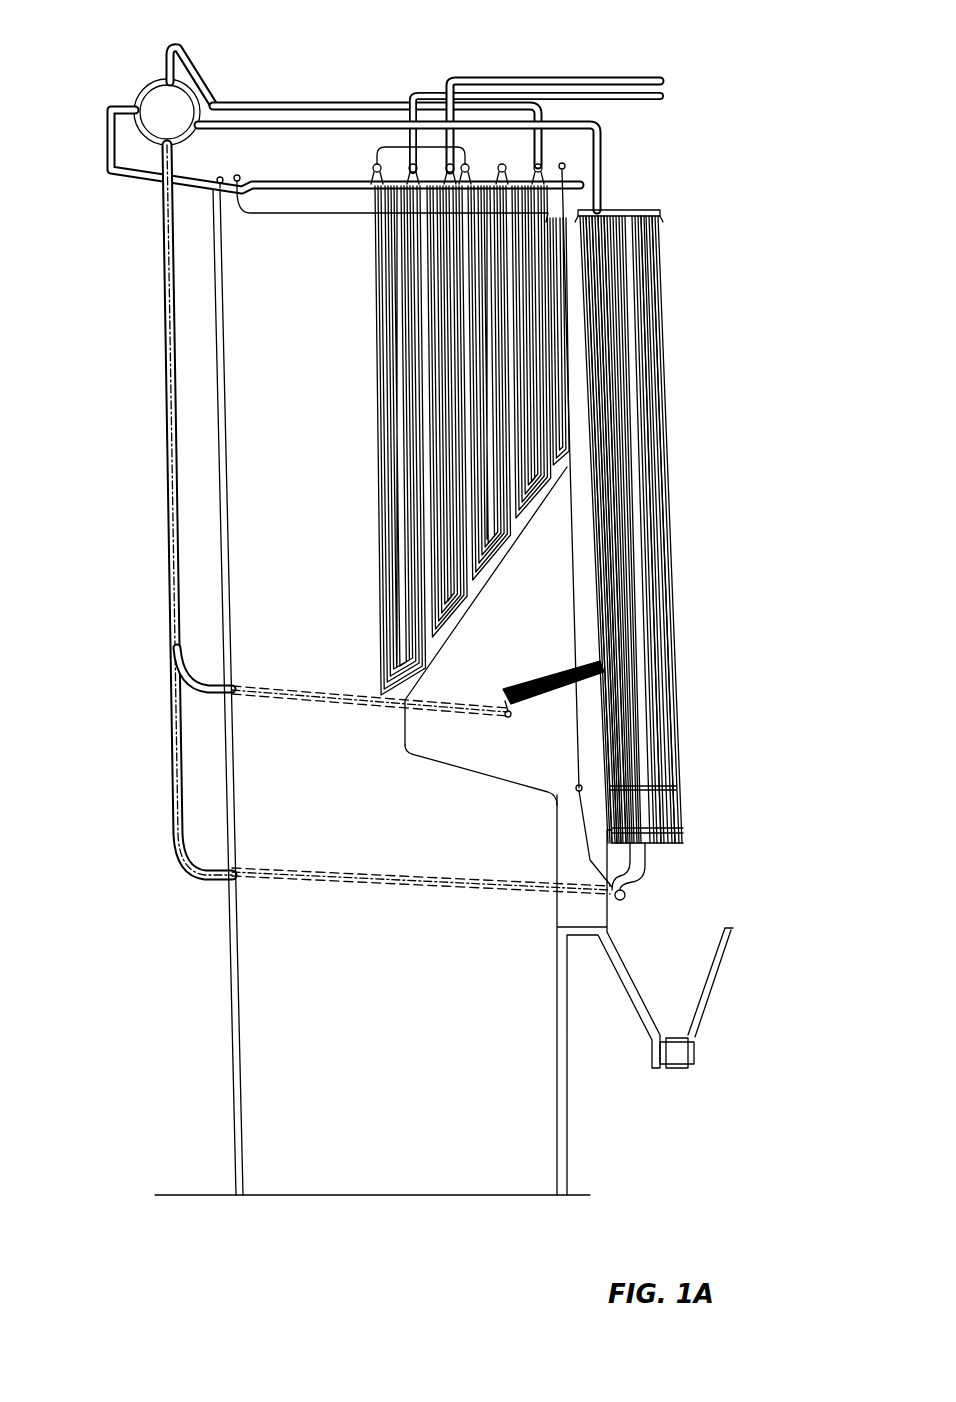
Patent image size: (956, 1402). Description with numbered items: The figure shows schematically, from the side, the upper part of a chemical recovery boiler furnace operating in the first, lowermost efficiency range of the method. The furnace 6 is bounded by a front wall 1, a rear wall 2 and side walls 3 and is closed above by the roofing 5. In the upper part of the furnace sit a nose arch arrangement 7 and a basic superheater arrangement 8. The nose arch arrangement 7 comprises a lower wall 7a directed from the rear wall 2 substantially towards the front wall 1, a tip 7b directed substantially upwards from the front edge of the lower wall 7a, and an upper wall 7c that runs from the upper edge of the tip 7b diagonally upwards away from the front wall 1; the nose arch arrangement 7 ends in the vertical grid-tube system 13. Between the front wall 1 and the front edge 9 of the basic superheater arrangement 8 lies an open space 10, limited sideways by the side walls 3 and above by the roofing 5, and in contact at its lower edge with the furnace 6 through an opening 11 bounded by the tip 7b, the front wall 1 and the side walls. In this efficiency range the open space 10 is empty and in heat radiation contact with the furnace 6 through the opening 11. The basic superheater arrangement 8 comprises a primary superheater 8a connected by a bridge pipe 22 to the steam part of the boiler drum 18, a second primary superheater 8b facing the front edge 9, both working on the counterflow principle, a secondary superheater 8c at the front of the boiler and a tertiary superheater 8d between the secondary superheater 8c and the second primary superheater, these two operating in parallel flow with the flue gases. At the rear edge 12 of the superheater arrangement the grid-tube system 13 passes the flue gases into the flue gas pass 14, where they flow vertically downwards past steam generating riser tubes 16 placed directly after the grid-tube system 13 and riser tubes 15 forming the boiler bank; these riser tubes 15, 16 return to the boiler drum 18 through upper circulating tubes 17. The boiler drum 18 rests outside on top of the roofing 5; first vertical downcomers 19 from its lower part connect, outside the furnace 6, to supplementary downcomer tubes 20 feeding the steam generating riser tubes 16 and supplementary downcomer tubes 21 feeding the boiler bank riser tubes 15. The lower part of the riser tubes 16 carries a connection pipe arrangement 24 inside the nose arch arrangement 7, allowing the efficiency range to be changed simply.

The front wall 1 is at (232, 957).
The rear wall 2 is at (568, 1062).
The side wall 3 is at (400, 1069).
The roofing 5 is at (270, 185).
The furnace 6 is at (408, 1002).
The nose arch arrangement 7 is at (658, 553).
The lower wall 7a is at (467, 770).
The tip 7b is at (402, 730).
The upper wall 7c is at (488, 583).
The basic superheater arrangement 8 is at (548, 222).
The primary superheater 8a is at (527, 473).
The primary superheater 8b is at (490, 520).
The secondary superheater 8c is at (395, 365).
The tertiary superheater 8d is at (443, 305).
The front edge 9 is at (436, 421).
The open space 10 is at (327, 450).
The opening 11 is at (315, 759).
The rear edge 12 is at (567, 357).
The grid-tube system 13 is at (572, 387).
The flue gas pass 14 is at (727, 336).
The riser tubes 15 is at (652, 595).
The steam generating riser tubes 16 is at (590, 530).
The upper circulating tubes 17 is at (567, 112).
The boiler drum 18 is at (142, 140).
The first vertical downcomers 19 is at (166, 437).
The supplementary downcomer tubes 20 is at (262, 693).
The supplementary downcomer tubes 21 is at (265, 878).
The bridge pipe 22 is at (318, 106).
The connection pipe arrangement 24 is at (560, 683).